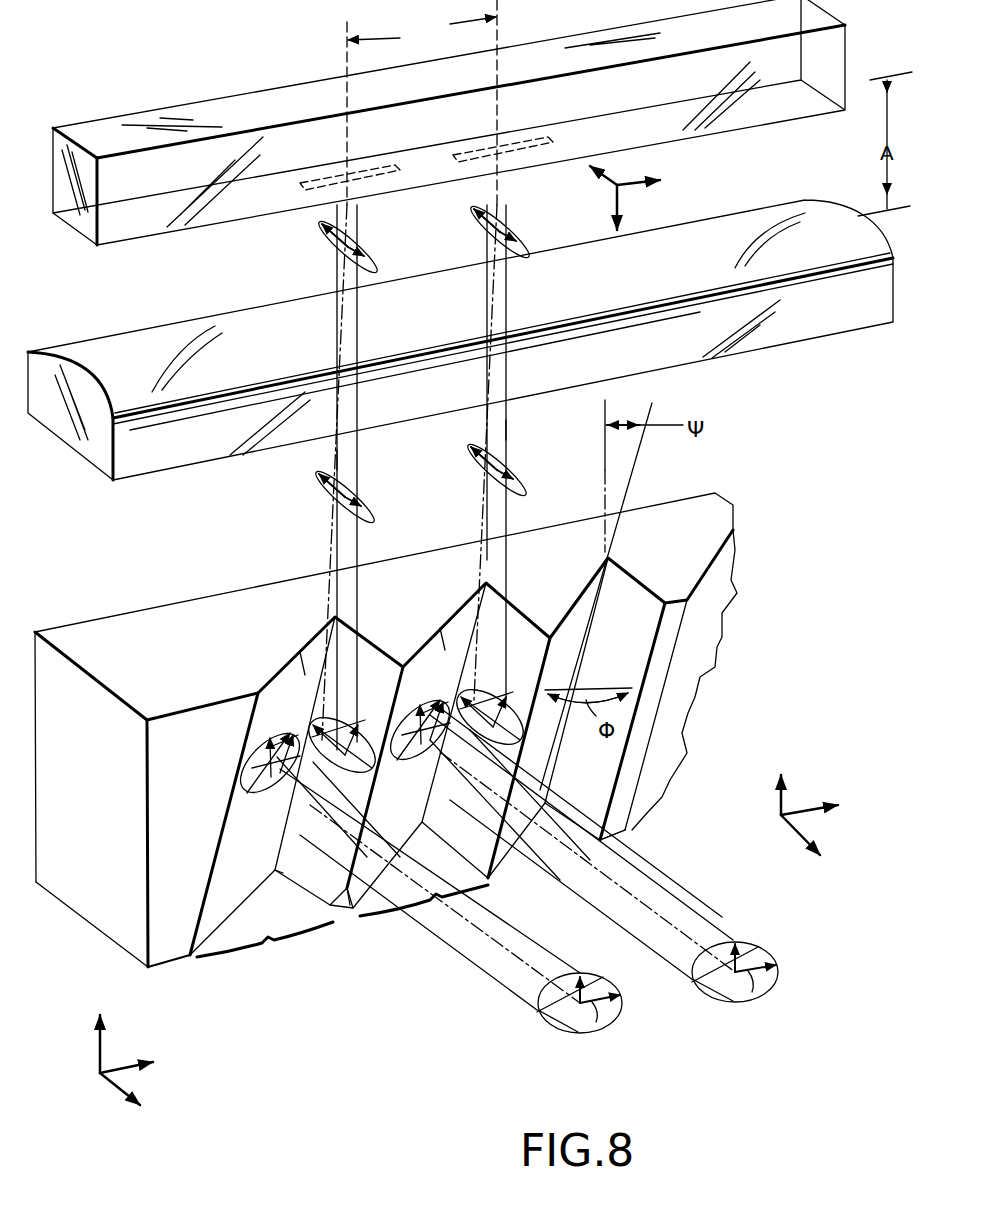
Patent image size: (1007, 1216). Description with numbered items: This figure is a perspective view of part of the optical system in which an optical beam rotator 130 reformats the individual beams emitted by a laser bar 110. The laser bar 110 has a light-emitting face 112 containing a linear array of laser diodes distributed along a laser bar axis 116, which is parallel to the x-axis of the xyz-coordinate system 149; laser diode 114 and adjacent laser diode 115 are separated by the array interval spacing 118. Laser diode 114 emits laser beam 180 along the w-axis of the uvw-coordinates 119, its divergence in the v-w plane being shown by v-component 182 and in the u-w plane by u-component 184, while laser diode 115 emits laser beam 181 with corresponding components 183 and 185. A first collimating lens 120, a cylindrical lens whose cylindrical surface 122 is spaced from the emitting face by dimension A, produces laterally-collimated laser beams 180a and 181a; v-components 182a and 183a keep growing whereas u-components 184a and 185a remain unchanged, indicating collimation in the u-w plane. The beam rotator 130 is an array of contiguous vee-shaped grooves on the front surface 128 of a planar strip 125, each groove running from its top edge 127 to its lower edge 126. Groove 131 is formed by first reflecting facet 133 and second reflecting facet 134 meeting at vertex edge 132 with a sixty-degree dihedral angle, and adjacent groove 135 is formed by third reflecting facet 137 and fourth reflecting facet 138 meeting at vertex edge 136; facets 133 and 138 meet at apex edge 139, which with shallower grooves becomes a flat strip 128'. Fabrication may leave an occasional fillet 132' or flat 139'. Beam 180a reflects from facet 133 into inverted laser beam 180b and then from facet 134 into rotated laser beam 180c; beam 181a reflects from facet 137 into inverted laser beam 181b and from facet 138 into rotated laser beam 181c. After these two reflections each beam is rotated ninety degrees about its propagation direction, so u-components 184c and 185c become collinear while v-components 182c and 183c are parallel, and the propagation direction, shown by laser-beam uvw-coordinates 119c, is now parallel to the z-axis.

The laser bar 110 is at (147, 92).
The light-emitting face 112 is at (72, 238).
The laser diode 114 is at (385, 178).
The laser diode 115 is at (532, 150).
The laser bar axis 116 is at (888, 78).
The array interval spacing 118 is at (422, 102).
The uvw-coordinates 119 is at (645, 197).
The first collimating lens 120 is at (110, 322).
The cylindrical surface 122 is at (262, 303).
The planar strip 125 is at (232, 590).
The lower edge 126 is at (107, 937).
The top edge 127 is at (110, 625).
The front surface 128 is at (176, 978).
The strip 128' is at (644, 832).
The optical beam rotator 130 is at (708, 472).
The groove 131 is at (265, 949).
The vertex edge 132 is at (254, 780).
The fillet 132' is at (270, 887).
The first reflecting facet 133 is at (377, 665).
The second reflecting facet 134 is at (280, 690).
The groove 135 is at (424, 908).
The vertex edge 136 is at (470, 645).
The third reflecting facet 137 is at (523, 640).
The fourth reflecting facet 138 is at (430, 657).
The apex edge 139 is at (363, 777).
The flat 139' is at (373, 919).
The xyz-coordinate system 149 is at (145, 1083).
The laser-beam uvw-coordinates 119c is at (808, 780).
The laser beam 180 is at (352, 225).
The laterally-collimated laser beam 180a is at (355, 450).
The inverted laser beam 180b is at (300, 805).
The rotated laser beam 180c is at (515, 935).
The laser beam 181 is at (508, 204).
The laterally-collimated laser beam 181a is at (508, 418).
The inverted laser beam 181b is at (475, 770).
The rotated laser beam 181c is at (668, 898).
The v-component 182 is at (335, 265).
The v-component 182a is at (336, 505).
The v-component 182c is at (583, 1035).
The v-component 183 is at (488, 240).
The v-component 183a is at (486, 478).
The v-component 183c is at (763, 1002).
The u-component 184 is at (368, 258).
The u-component 184a is at (378, 508).
The u-component 184c is at (608, 1015).
The u-component 185 is at (520, 240).
The u-component 185a is at (520, 472).
The u-component 185c is at (763, 990).